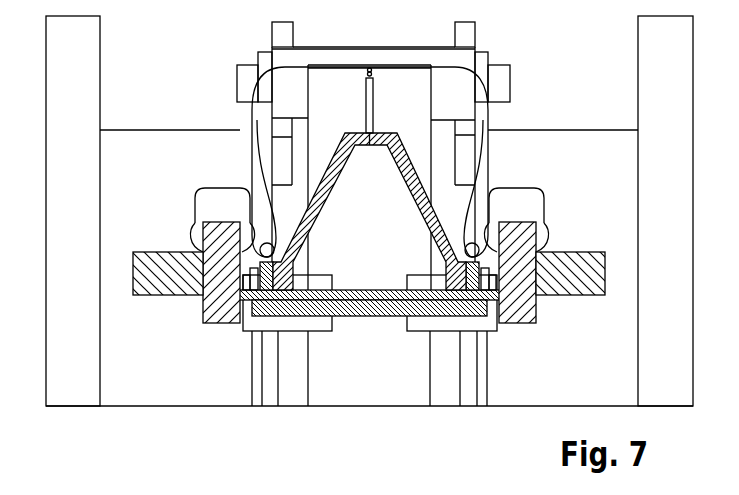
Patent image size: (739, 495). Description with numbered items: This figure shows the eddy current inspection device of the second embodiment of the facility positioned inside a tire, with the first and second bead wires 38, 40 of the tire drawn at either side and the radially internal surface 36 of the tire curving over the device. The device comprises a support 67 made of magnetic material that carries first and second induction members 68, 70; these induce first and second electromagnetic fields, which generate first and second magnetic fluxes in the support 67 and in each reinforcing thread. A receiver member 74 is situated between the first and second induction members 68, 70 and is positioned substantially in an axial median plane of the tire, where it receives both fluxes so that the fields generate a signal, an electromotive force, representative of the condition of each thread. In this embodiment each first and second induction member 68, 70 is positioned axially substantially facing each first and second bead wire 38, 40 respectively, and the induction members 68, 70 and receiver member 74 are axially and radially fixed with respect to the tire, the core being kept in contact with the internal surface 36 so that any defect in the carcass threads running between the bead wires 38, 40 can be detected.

The radially internal surface 36 is at (386, 66).
The first circular bead wire 38 is at (468, 240).
The second circular bead wire 40 is at (262, 211).
The support 67 is at (327, 160).
The first induction member 68 is at (501, 256).
The second induction member 70 is at (236, 277).
The receiver member 74 is at (360, 99).